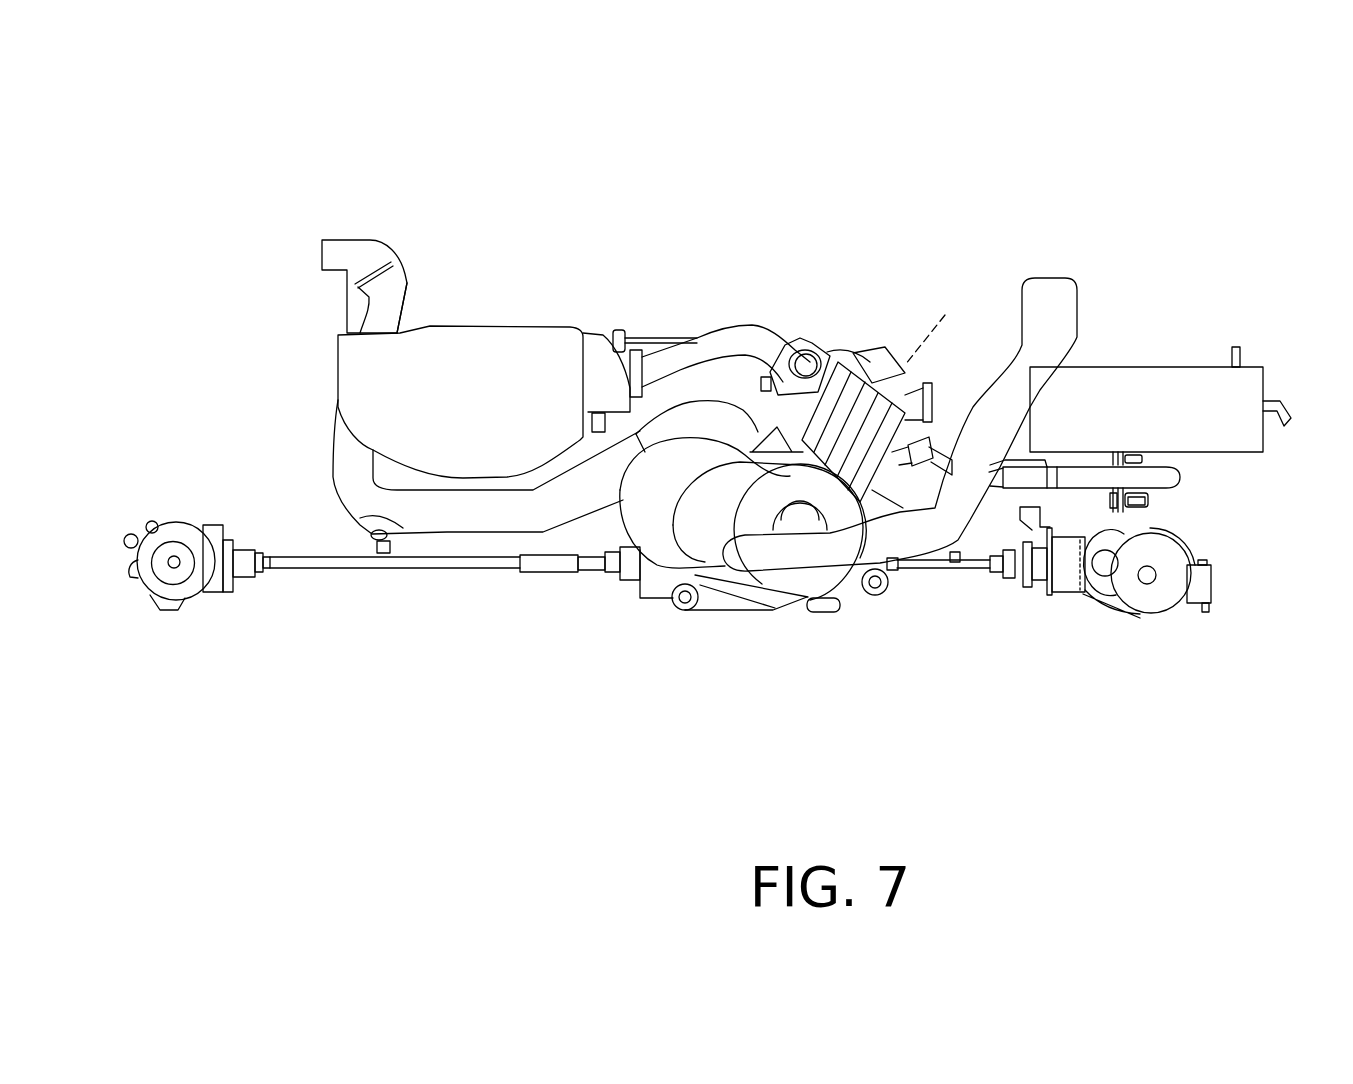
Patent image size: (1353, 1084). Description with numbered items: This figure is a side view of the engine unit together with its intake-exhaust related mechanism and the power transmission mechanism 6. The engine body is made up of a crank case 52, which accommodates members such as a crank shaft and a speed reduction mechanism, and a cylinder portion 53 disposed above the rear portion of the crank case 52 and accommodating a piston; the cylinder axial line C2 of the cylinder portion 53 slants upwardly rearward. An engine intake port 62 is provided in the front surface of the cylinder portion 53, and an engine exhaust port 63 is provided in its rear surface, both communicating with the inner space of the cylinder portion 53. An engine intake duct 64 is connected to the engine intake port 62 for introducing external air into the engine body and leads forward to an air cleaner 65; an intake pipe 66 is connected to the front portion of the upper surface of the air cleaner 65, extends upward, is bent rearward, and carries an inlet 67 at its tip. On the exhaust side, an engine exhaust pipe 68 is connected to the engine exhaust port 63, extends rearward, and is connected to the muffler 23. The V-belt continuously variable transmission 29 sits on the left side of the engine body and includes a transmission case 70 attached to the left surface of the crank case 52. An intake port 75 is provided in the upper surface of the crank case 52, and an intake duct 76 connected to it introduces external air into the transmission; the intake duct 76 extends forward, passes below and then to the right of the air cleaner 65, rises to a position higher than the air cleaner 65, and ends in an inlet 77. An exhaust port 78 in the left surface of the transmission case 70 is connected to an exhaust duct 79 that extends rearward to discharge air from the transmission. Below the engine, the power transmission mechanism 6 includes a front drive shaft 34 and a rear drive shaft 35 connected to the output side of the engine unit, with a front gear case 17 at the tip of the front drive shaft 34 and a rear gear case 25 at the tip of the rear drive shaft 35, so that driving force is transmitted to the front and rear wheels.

The inlet 77 is at (312, 242).
The intake pipe 66 is at (388, 283).
The inlet 67 is at (365, 267).
The air cleaner 65 is at (479, 322).
The engine intake duct 64 is at (698, 352).
The intake port 75 is at (753, 450).
The crank case 52 is at (791, 465).
The engine intake port 62 is at (820, 350).
The cylinder portion 53 is at (870, 370).
The cylinder axial line C2 is at (920, 348).
The engine exhaust port 63 is at (945, 452).
The muffler 23 is at (1154, 380).
The engine exhaust pipe 68 is at (1172, 480).
The front gear case 17 is at (178, 533).
The front drive shaft 34 is at (310, 565).
The intake duct 76 is at (478, 520).
The power transmission mechanism 6 is at (565, 587).
The transmission case 70 is at (655, 555).
The V-belt continuously variable transmission 29 is at (688, 563).
The exhaust port 78 is at (712, 580).
The exhaust duct 79 is at (862, 585).
The rear drive shaft 35 is at (947, 580).
The rear gear case 25 is at (1103, 590).